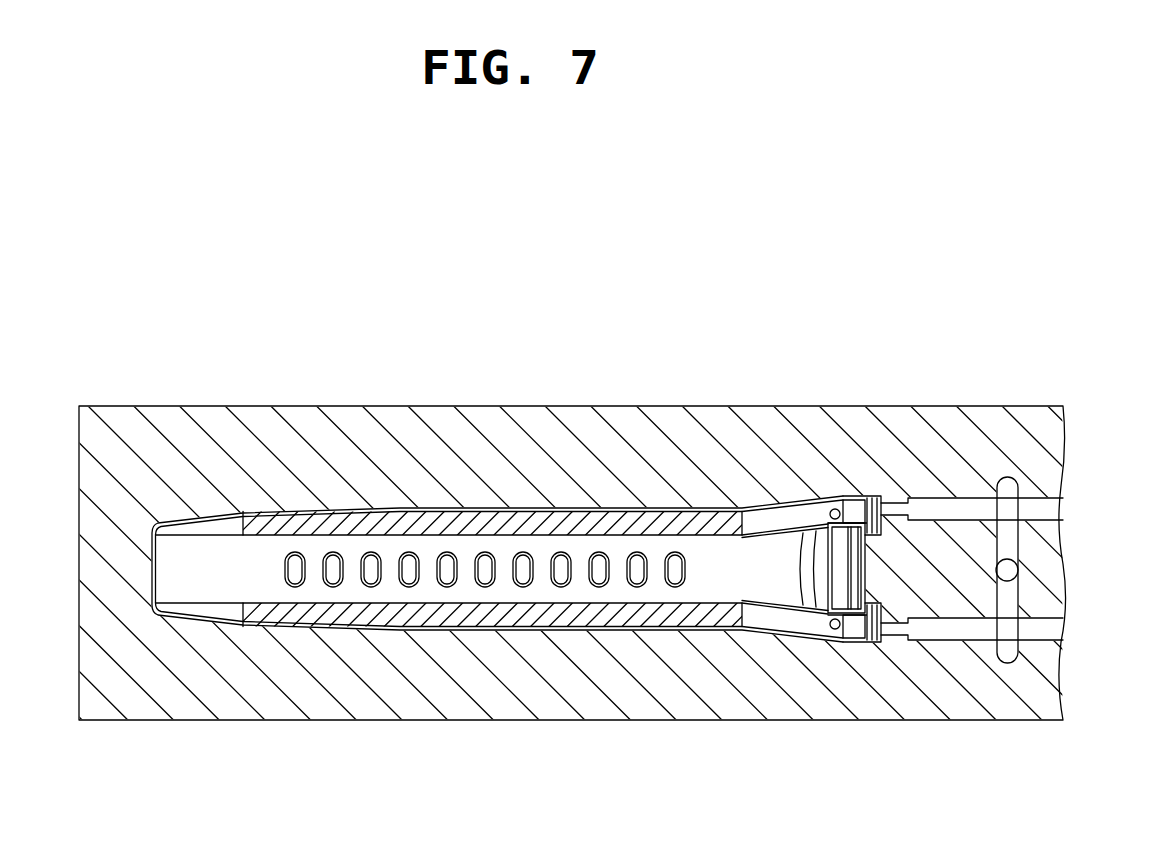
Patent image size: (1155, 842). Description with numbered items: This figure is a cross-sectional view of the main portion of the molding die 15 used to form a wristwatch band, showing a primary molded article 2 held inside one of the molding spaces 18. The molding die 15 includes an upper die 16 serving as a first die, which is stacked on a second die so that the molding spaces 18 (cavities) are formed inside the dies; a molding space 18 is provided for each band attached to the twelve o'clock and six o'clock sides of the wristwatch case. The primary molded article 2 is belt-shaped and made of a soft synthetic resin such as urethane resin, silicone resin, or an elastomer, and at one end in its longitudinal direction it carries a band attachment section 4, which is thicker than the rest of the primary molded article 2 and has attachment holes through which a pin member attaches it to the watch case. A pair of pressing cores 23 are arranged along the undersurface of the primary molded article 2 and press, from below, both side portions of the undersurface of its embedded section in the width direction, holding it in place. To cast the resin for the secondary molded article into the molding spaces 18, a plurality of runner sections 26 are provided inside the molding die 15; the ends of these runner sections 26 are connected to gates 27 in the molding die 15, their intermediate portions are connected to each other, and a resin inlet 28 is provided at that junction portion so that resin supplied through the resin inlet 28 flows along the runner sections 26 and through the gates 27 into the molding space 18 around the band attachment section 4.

The molding die 15 is at (249, 400).
The upper die 16 is at (351, 410).
The primary molded article 2 is at (428, 548).
The pressing cores 23 is at (538, 523).
The molding spaces 18 is at (645, 508).
The band attachment section 4 is at (858, 508).
The gates 27 is at (892, 510).
The runner sections 26 is at (1052, 509).
The resin inlet 28 is at (1013, 568).